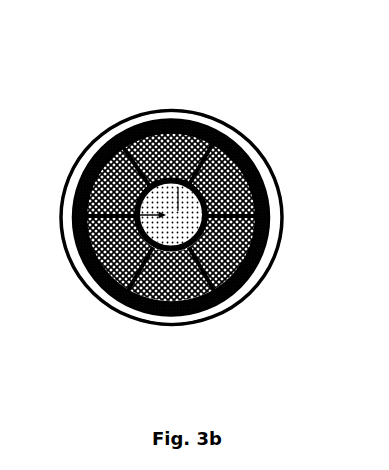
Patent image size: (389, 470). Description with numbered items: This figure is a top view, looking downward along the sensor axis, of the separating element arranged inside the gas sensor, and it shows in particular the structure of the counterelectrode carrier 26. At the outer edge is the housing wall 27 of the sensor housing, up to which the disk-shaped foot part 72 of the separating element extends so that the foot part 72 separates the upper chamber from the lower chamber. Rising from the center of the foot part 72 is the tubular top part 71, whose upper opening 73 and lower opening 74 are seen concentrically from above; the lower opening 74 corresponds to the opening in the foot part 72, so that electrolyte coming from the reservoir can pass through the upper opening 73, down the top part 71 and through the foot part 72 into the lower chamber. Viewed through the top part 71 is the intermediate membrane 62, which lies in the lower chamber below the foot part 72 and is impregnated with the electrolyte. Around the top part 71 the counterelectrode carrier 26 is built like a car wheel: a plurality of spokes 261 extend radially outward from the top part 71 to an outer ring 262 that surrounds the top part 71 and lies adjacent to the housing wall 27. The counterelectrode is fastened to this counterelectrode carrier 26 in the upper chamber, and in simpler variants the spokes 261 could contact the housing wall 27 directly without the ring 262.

The counterelectrode carrier 26 is at (219, 208).
The spoke 261 is at (241, 147).
The outer ring 262 is at (267, 233).
The housing wall 27 is at (243, 292).
The intermediate membrane 62 is at (156, 121).
The top part 71 is at (173, 268).
The foot part 72 is at (138, 313).
The upper opening 73 is at (147, 206).
The lower opening 74 is at (75, 181).